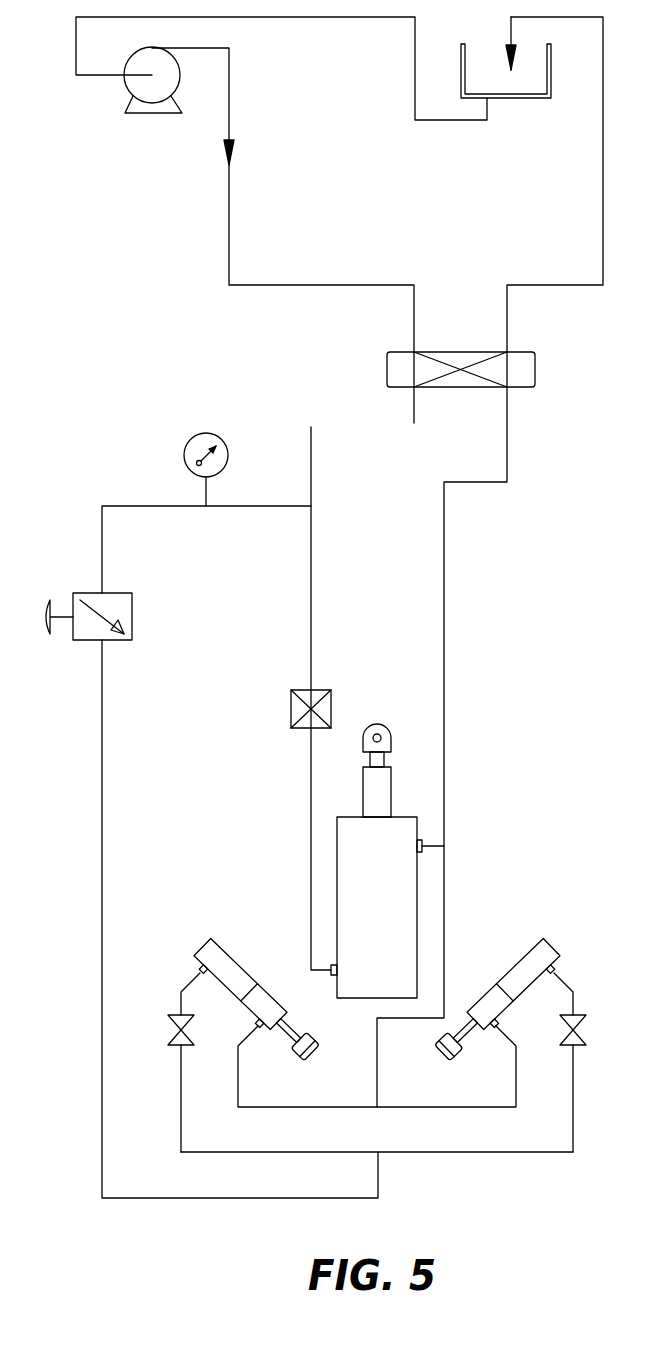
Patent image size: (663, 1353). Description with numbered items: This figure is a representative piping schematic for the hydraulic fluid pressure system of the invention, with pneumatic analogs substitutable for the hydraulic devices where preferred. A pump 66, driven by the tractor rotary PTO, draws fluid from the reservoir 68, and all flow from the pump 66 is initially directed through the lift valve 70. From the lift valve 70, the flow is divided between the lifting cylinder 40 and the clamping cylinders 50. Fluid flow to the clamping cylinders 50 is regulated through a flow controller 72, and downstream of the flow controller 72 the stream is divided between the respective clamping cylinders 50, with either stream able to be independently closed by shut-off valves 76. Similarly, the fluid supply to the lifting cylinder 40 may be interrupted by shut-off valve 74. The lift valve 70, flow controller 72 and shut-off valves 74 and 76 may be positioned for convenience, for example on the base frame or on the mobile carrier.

The lifting cylinder 40 is at (387, 861).
The clamping cylinders 50 is at (235, 960).
The pump 66 is at (130, 82).
The reservoir 68 is at (523, 100).
The lift valve 70 is at (523, 366).
The flow controller 72 is at (122, 613).
The shut-off valve 74 is at (291, 714).
The shut-off valves 76 is at (170, 1028).